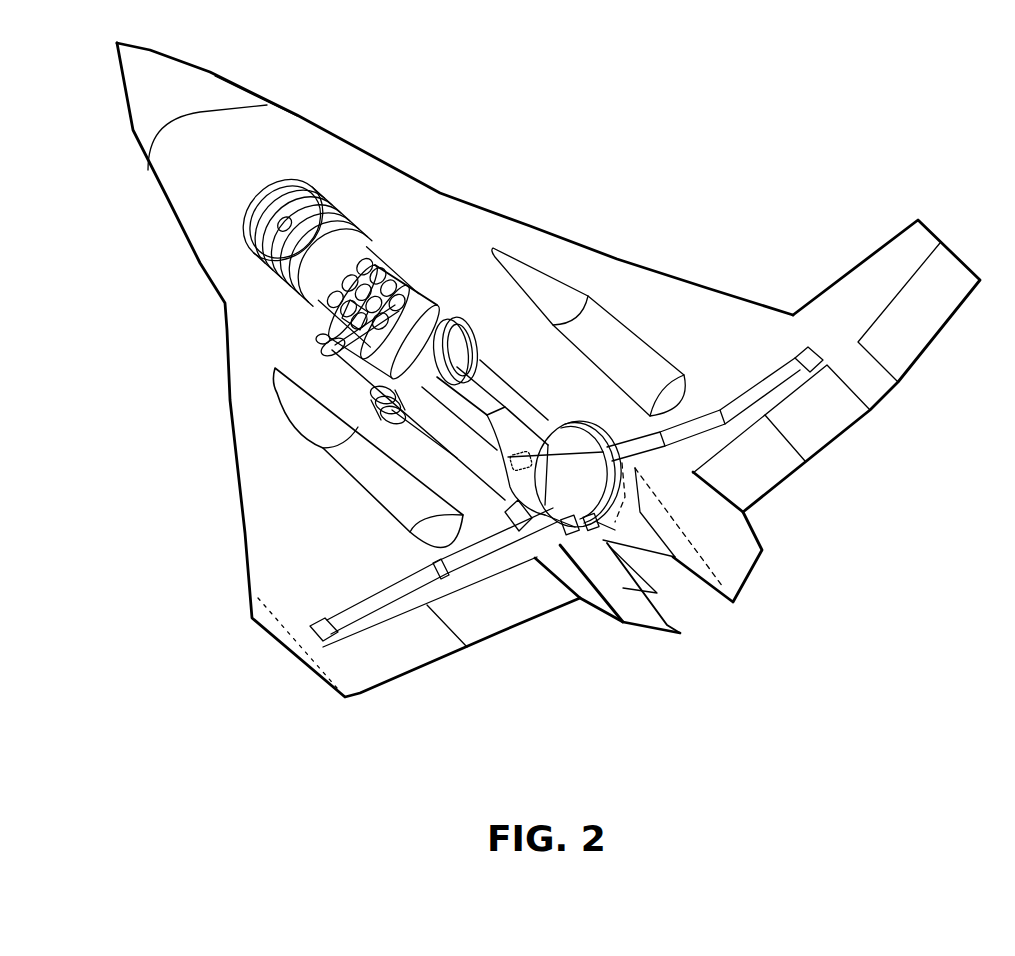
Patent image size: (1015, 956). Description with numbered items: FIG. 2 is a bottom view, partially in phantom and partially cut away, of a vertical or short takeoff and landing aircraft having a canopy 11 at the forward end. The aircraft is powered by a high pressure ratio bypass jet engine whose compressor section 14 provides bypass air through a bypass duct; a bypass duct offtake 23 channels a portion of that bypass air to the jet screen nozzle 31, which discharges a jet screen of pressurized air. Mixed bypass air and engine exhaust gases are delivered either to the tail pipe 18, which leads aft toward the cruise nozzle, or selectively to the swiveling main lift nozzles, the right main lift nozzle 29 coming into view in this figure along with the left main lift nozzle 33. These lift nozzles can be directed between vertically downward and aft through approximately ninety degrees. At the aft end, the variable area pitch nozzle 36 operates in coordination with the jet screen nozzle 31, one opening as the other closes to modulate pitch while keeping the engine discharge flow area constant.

The canopy 11 is at (260, 80).
The compressor section 14 is at (352, 205).
The bypass duct offtake 23 is at (392, 305).
The left main lift nozzle 33 is at (470, 337).
The tail pipe 18 is at (523, 407).
The jet screen nozzle 31 is at (330, 350).
The right main lift nozzle 29 is at (376, 412).
The variable area pitch nozzle 36 is at (600, 540).